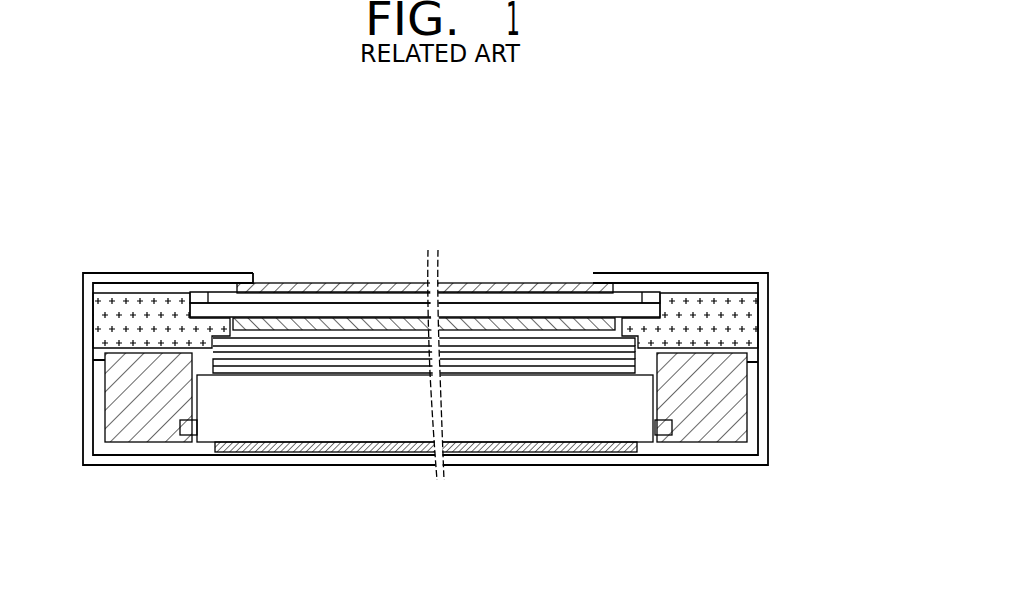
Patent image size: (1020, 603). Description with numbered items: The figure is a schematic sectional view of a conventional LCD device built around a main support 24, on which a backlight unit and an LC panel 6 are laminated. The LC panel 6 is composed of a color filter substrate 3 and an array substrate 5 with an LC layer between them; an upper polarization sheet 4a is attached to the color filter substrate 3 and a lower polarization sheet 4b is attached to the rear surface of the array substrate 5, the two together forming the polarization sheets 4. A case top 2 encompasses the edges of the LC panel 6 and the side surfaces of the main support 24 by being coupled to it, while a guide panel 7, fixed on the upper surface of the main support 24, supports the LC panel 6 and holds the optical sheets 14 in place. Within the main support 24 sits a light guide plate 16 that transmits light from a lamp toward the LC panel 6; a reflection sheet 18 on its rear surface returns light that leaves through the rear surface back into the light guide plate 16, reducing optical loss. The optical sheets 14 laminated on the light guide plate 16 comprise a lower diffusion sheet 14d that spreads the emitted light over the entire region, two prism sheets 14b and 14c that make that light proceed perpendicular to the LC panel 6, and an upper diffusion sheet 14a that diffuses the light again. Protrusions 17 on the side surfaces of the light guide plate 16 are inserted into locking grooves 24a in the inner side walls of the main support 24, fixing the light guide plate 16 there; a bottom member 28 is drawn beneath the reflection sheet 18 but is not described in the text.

The case top 2 is at (693, 278).
The guide panel 7 is at (724, 310).
The polarization sheets 4 is at (424, 250).
The upper polarization sheet 4a is at (310, 285).
The lower polarization sheet 4b is at (340, 320).
The LC panel 6 is at (425, 244).
The color filter substrate 3 is at (489, 301).
The array substrate 5 is at (532, 312).
The optical sheets 14 is at (424, 452).
The upper diffusion sheet 14a is at (257, 362).
The prism sheet 14b is at (292, 357).
The prism sheet 14c is at (328, 350).
The lower diffusion sheet 14d is at (362, 345).
The light guide plate 16 is at (542, 430).
The protrusions 17 is at (188, 437).
The reflection sheet 18 is at (505, 452).
The main support 24 is at (708, 432).
The locking grooves 24a is at (662, 436).
The bottom chassis 28 is at (472, 458).